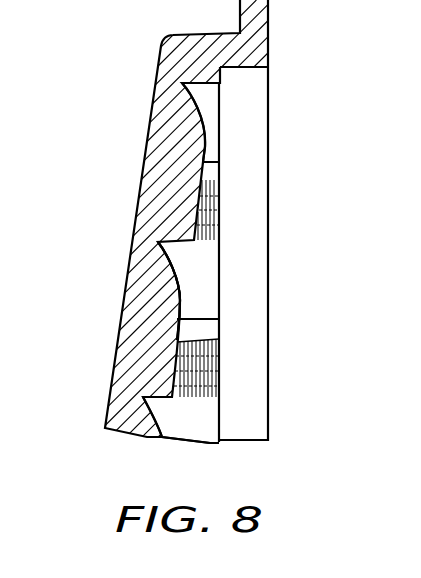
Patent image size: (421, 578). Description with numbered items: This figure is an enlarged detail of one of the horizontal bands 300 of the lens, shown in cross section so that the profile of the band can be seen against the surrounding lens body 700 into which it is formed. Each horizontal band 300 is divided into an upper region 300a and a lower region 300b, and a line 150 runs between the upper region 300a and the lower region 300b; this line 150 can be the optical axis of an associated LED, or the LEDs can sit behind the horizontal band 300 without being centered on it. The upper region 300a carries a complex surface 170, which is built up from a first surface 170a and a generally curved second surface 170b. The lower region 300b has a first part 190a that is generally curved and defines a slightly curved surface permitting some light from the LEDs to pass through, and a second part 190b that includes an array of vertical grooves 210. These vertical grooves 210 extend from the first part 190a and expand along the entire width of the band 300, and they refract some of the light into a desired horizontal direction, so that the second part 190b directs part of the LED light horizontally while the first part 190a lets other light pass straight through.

The seal body 700 is at (140, 154).
The horizontal band 300 is at (215, 147).
The first surface 170a is at (220, 245).
The second surface 170b is at (181, 281).
The complex surface 170 is at (193, 296).
The line 150 is at (220, 318).
The first part 190a is at (207, 332).
The second part 190b is at (208, 372).
The vertical grooves 210 is at (195, 397).
The upper region 300a is at (110, 318).
The lower region 300b is at (103, 397).